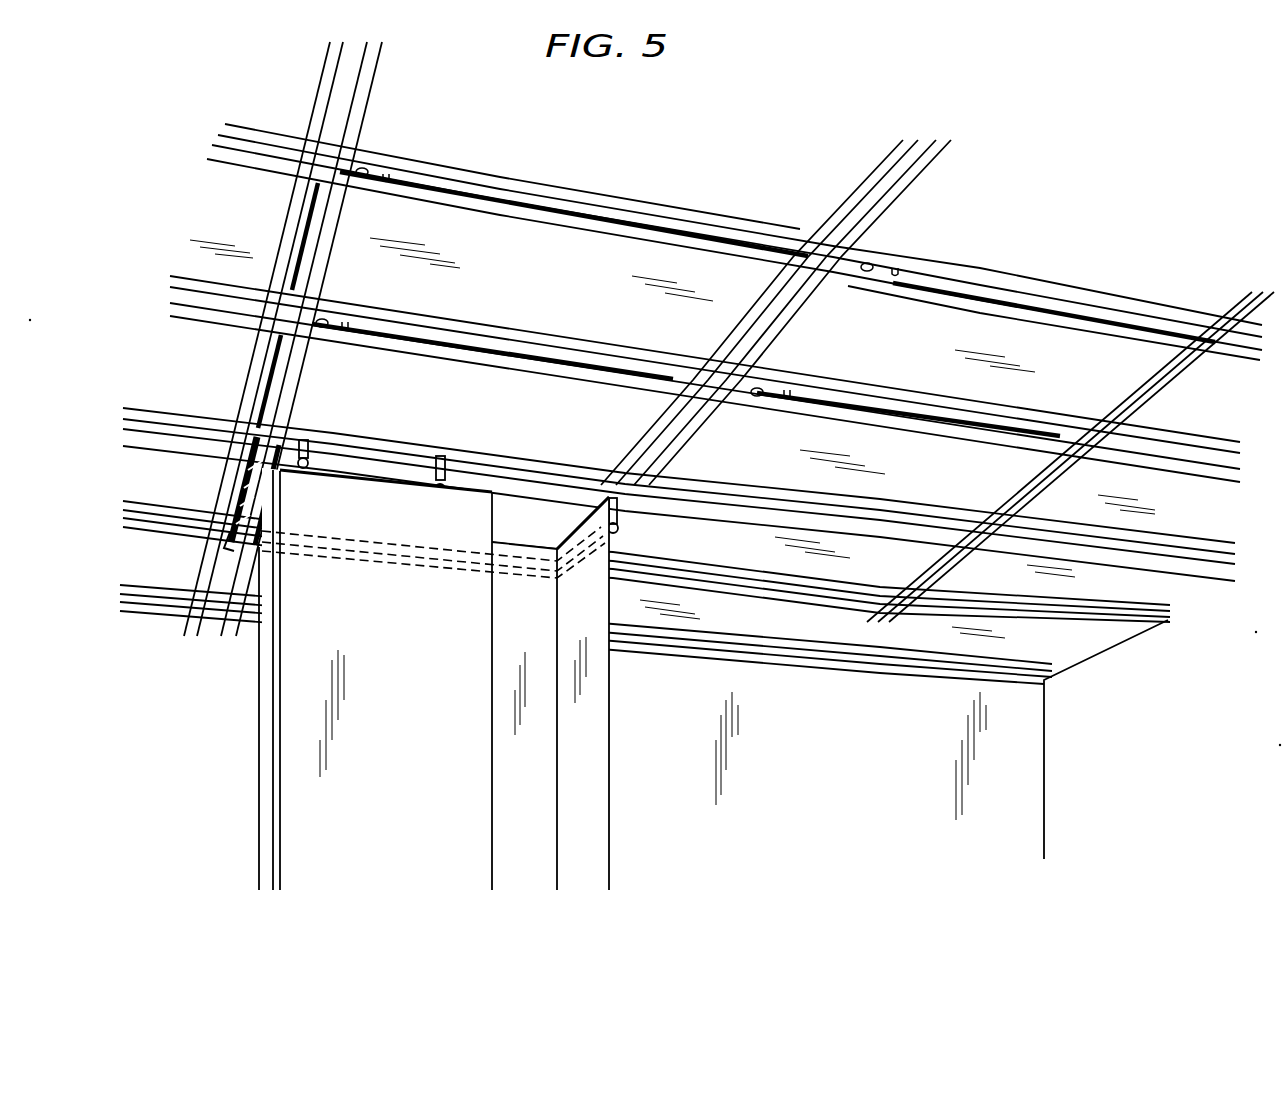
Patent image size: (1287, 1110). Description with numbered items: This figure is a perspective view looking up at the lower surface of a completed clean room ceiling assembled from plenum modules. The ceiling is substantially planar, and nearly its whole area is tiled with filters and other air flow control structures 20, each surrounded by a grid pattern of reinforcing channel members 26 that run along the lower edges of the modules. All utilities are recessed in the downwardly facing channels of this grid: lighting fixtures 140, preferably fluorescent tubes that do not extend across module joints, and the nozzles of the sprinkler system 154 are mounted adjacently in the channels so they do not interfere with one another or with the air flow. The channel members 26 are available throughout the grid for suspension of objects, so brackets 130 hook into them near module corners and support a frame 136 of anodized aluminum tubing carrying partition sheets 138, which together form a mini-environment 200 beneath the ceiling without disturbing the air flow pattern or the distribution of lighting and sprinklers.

The air filter 20 is at (554, 272).
The channel member 26 is at (620, 482).
The bracket 130 is at (318, 443).
The frame 136 is at (255, 535).
The partition sheet 138 is at (416, 660).
The lighting fixture 140 is at (578, 210).
The sprinkler system nozzle 154 is at (370, 170).
The mini-environment 200 is at (540, 757).